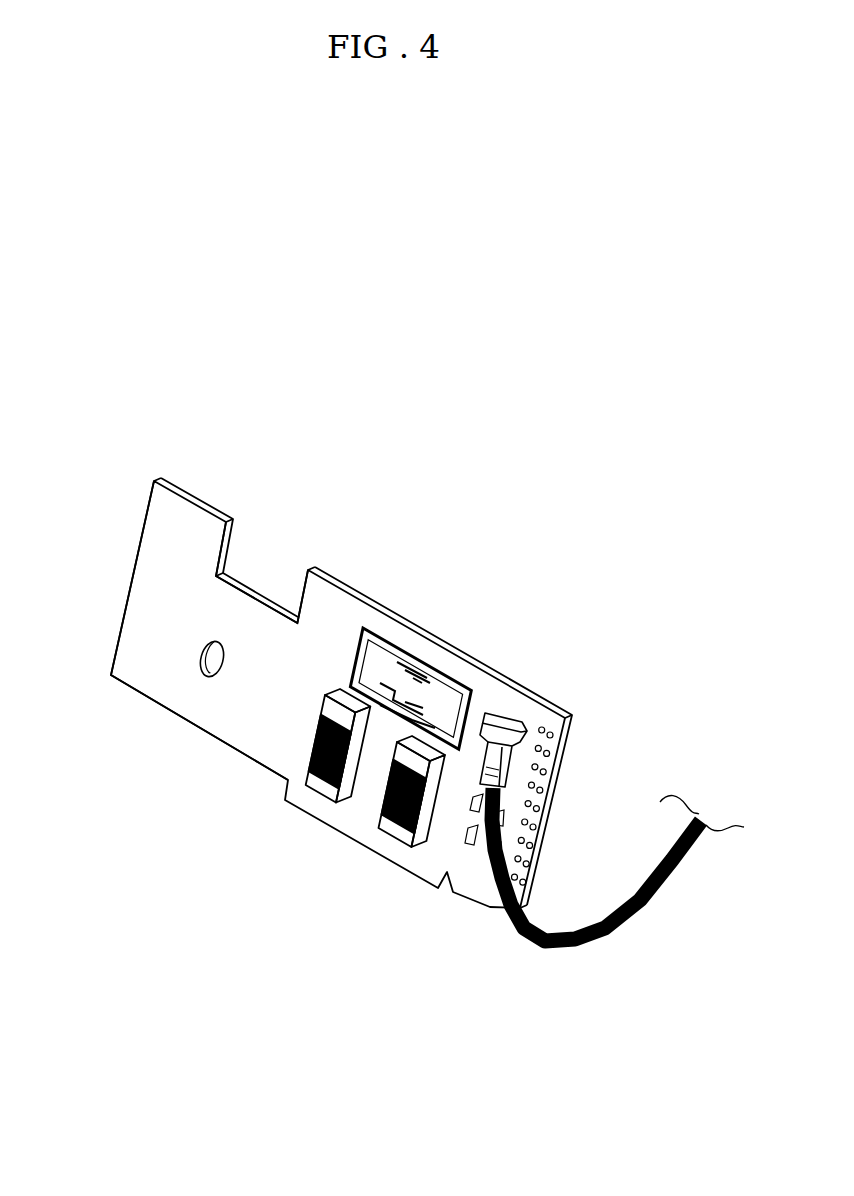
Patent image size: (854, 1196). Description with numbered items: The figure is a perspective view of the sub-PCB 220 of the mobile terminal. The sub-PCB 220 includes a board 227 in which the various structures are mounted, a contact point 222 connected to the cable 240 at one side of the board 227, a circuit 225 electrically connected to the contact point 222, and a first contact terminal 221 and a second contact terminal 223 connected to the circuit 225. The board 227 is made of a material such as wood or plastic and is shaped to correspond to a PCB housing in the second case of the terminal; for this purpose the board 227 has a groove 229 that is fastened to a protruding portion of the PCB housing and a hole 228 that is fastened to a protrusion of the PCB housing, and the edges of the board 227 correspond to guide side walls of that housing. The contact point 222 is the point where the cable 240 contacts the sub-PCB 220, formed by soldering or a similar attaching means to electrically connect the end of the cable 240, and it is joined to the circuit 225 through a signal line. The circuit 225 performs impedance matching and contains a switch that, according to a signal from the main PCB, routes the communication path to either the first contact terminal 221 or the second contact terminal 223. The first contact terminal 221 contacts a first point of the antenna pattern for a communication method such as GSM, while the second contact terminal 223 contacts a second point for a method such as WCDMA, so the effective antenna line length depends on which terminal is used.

The sub-PCB 220 is at (400, 517).
The first contact terminal 221 is at (398, 829).
The contact point 222 is at (512, 710).
The second contact terminal 223 is at (323, 784).
The circuit 225 is at (424, 664).
The board 227 is at (147, 620).
The hole 228 is at (203, 661).
The groove 229 is at (271, 556).
The cable 240 is at (603, 937).